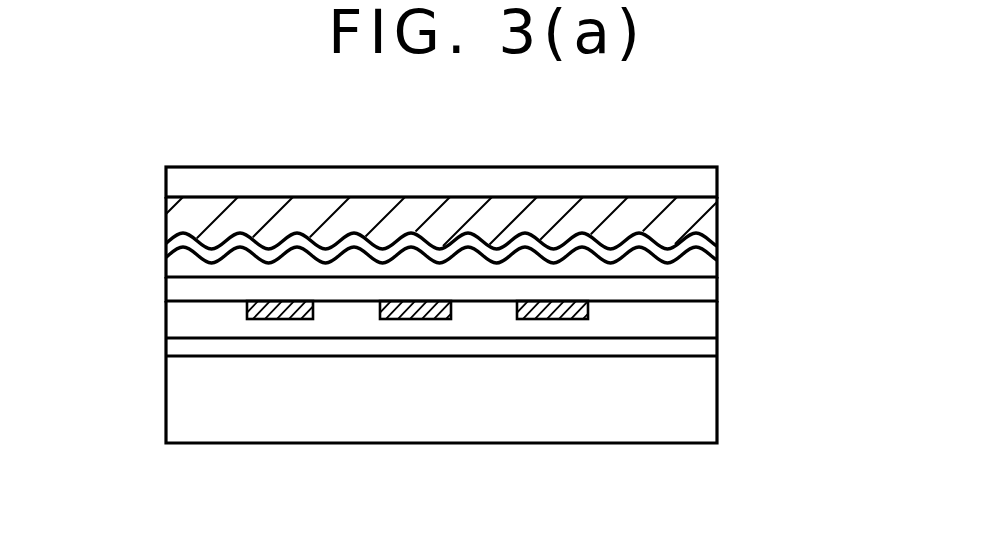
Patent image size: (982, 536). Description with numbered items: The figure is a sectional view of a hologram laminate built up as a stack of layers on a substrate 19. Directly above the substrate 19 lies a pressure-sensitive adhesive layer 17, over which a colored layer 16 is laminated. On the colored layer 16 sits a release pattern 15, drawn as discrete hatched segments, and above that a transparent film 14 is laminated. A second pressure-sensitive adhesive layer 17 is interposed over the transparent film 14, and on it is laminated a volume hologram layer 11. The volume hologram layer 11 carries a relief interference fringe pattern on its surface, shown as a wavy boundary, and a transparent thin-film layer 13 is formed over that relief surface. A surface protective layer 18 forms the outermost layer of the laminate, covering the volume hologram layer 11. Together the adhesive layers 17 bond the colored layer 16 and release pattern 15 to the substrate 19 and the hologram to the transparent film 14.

The surface protective layer 18 is at (717, 176).
The volume hologram layer 11 is at (717, 212).
The transparent thin-film layer 13 is at (717, 250).
The pressure-sensitive adhesive layer 17 is at (170, 262).
The transparent film 14 is at (717, 296).
The release pattern 15 is at (588, 315).
The colored layer 16 is at (700, 333).
The substrate 19 is at (710, 405).